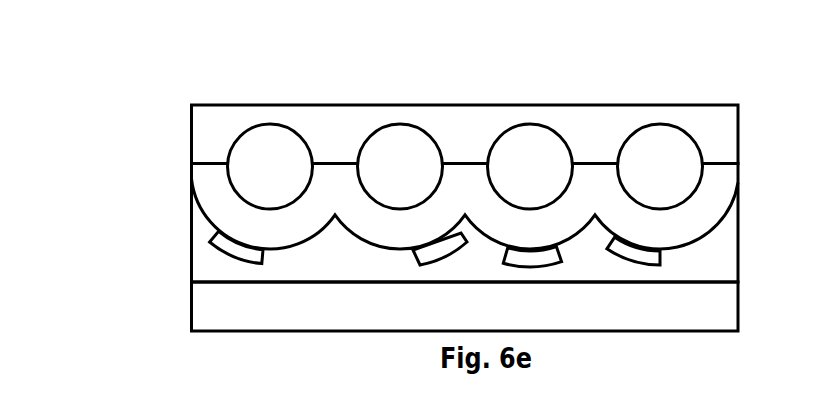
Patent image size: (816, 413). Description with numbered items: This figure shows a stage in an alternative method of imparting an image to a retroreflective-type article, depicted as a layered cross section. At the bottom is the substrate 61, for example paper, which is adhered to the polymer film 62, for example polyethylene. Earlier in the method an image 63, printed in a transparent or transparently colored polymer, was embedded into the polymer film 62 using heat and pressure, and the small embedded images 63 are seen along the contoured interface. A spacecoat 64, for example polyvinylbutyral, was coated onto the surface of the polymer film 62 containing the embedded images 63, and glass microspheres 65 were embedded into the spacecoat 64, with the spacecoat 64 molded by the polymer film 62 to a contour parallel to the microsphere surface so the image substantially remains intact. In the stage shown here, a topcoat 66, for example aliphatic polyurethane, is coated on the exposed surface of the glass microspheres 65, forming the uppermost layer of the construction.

The substrate 61 is at (205, 318).
The polymer film 62 is at (205, 255).
The image 63 is at (218, 236).
The spacecoat 64 is at (323, 187).
The glass microspheres 65 is at (268, 165).
The topcoat 66 is at (218, 133).